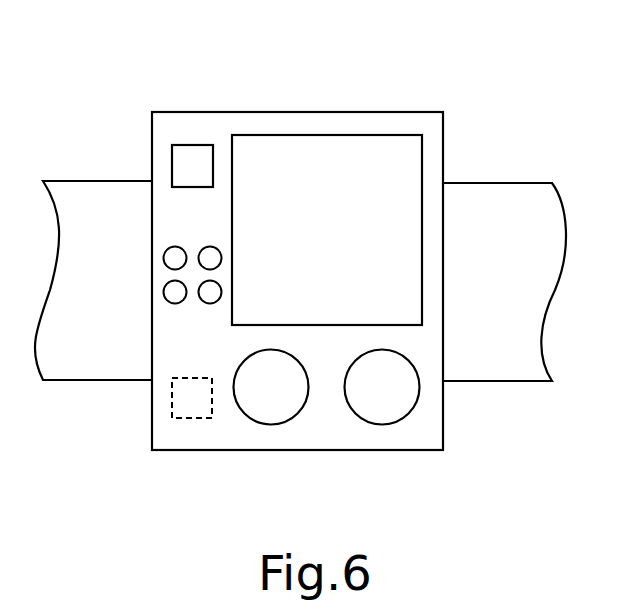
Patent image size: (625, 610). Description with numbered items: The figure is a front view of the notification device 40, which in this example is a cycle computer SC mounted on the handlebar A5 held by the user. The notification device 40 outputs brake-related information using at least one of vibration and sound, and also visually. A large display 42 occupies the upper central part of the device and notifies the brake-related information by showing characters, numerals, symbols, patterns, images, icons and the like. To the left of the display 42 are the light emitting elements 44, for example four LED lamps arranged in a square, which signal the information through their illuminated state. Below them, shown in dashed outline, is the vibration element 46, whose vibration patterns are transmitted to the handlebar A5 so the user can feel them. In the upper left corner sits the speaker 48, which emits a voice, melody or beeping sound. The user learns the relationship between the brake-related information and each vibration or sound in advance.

The notification device 40 is at (459, 70).
The cycle computer SC is at (443, 122).
The display 42 is at (423, 228).
The light emitting element 44 is at (163, 259).
The vibration element 46 is at (168, 398).
The speaker 48 is at (168, 165).
The handlebar A5 is at (502, 382).